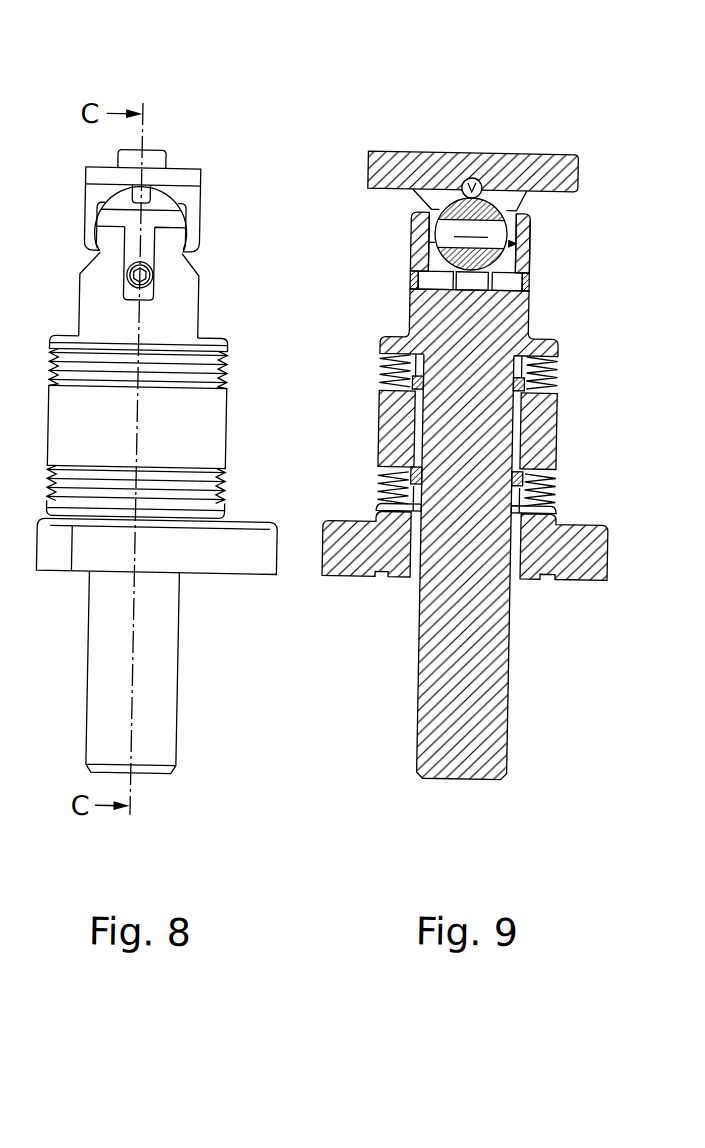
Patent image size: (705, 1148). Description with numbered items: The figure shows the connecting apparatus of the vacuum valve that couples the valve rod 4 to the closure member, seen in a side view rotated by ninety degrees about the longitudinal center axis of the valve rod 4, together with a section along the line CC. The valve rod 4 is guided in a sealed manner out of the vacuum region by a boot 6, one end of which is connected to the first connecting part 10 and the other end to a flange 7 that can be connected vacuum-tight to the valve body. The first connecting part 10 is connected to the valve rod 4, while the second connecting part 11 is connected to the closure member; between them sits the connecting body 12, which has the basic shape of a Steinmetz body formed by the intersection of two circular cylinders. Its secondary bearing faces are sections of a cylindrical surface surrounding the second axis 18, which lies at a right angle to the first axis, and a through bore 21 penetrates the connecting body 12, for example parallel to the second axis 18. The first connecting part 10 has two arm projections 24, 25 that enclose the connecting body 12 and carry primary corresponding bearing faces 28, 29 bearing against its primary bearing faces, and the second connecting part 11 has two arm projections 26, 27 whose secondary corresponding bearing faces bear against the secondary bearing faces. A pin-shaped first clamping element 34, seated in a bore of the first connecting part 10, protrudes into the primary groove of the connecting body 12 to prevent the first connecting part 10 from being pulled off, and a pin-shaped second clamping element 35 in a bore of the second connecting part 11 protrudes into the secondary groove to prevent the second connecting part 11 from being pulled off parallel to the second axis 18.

In FIG. 8, the valve rod 4 is at (169, 680).
In FIG. 9, the valve rod 4 is at (510, 571).
In FIG. 9, the boot 6 is at (520, 458).
In FIG. 8, the flange 7 is at (156, 589).
In FIG. 9, the flange 7 is at (499, 553).
In FIG. 9, the first connecting part 10 is at (509, 322).
In FIG. 8, the second connecting part 11 is at (158, 132).
In FIG. 9, the second connecting part 11 is at (511, 162).
In FIG. 8, the connecting body 12 is at (183, 189).
In FIG. 9, the connecting body 12 is at (489, 173).
In FIG. 9, the second axis 18 is at (610, 240).
In FIG. 9, the through bore 21 is at (570, 176).
In FIG. 8, the arm projection 24 is at (184, 255).
In FIG. 9, the arm projection 24 is at (573, 234).
In FIG. 9, the arm projection 25 is at (364, 218).
In FIG. 8, the arm projection 26 is at (52, 216).
In FIG. 8, the arm projection 27 is at (225, 220).
In FIG. 9, the primary corresponding bearing face 28 is at (575, 267).
In FIG. 9, the primary corresponding bearing face 29 is at (379, 252).
In FIG. 8, the first clamping element 34 is at (204, 301).
In FIG. 9, the first clamping element 34 is at (425, 301).
In FIG. 9, the second clamping element 35 is at (425, 136).